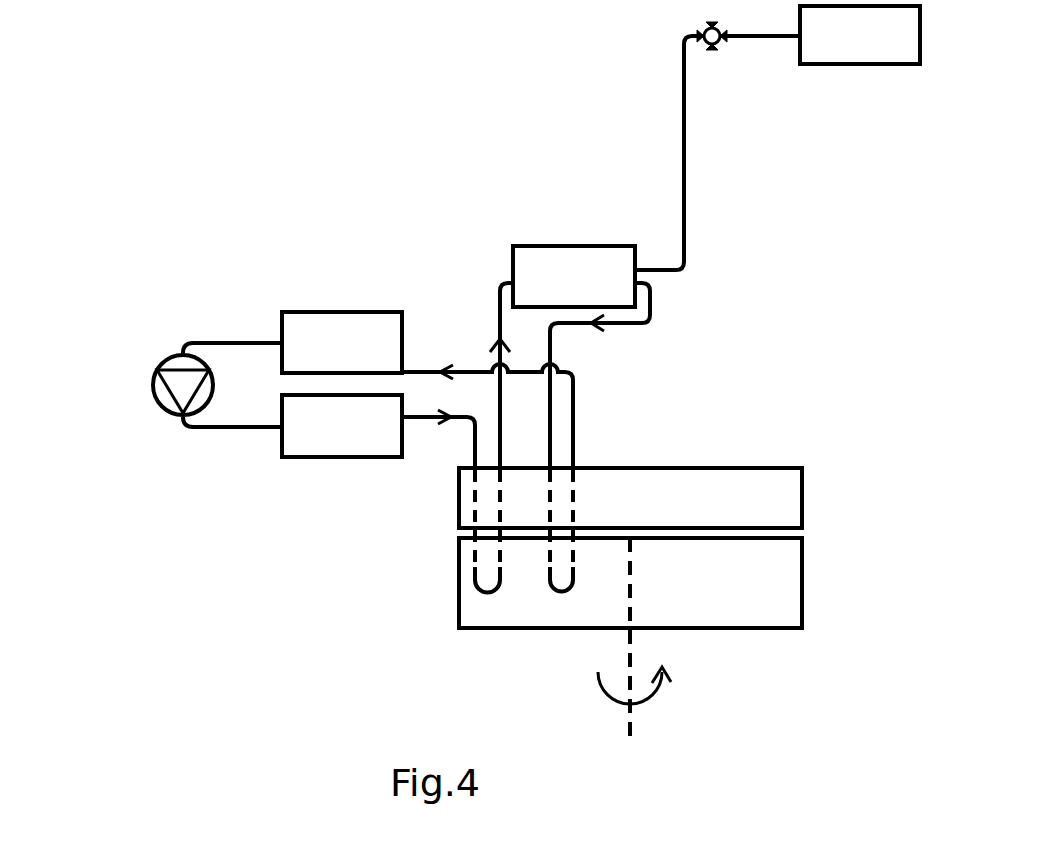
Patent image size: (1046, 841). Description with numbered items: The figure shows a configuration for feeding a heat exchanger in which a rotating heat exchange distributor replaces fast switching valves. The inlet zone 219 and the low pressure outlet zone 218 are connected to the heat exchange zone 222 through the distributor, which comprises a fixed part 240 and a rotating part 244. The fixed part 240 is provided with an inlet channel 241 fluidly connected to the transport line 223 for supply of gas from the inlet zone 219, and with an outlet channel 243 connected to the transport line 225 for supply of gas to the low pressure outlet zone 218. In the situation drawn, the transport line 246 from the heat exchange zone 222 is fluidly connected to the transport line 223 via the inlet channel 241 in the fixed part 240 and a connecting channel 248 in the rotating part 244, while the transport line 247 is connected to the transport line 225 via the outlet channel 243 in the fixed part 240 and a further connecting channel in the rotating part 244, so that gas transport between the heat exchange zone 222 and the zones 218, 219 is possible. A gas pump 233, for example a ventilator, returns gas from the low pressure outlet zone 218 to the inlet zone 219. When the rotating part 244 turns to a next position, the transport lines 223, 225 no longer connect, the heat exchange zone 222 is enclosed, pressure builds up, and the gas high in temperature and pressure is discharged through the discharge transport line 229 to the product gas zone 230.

The low pressure outlet zone 218 is at (342, 342).
The inlet zone 219 is at (342, 426).
The heat exchange zone 222 is at (574, 276).
The transport line 223 is at (430, 421).
The transport line 225 is at (429, 370).
The discharge transport line 229 is at (682, 44).
The product gas zone 230 is at (860, 35).
The gas pump 233 is at (157, 372).
The fixed part 240 is at (788, 502).
The inlet channel 241 is at (490, 478).
The outlet channel 243 is at (562, 500).
The rotating part 244 is at (788, 613).
The transport line 246 is at (499, 288).
The transport line 247 is at (653, 293).
The connecting channel 248 is at (487, 580).